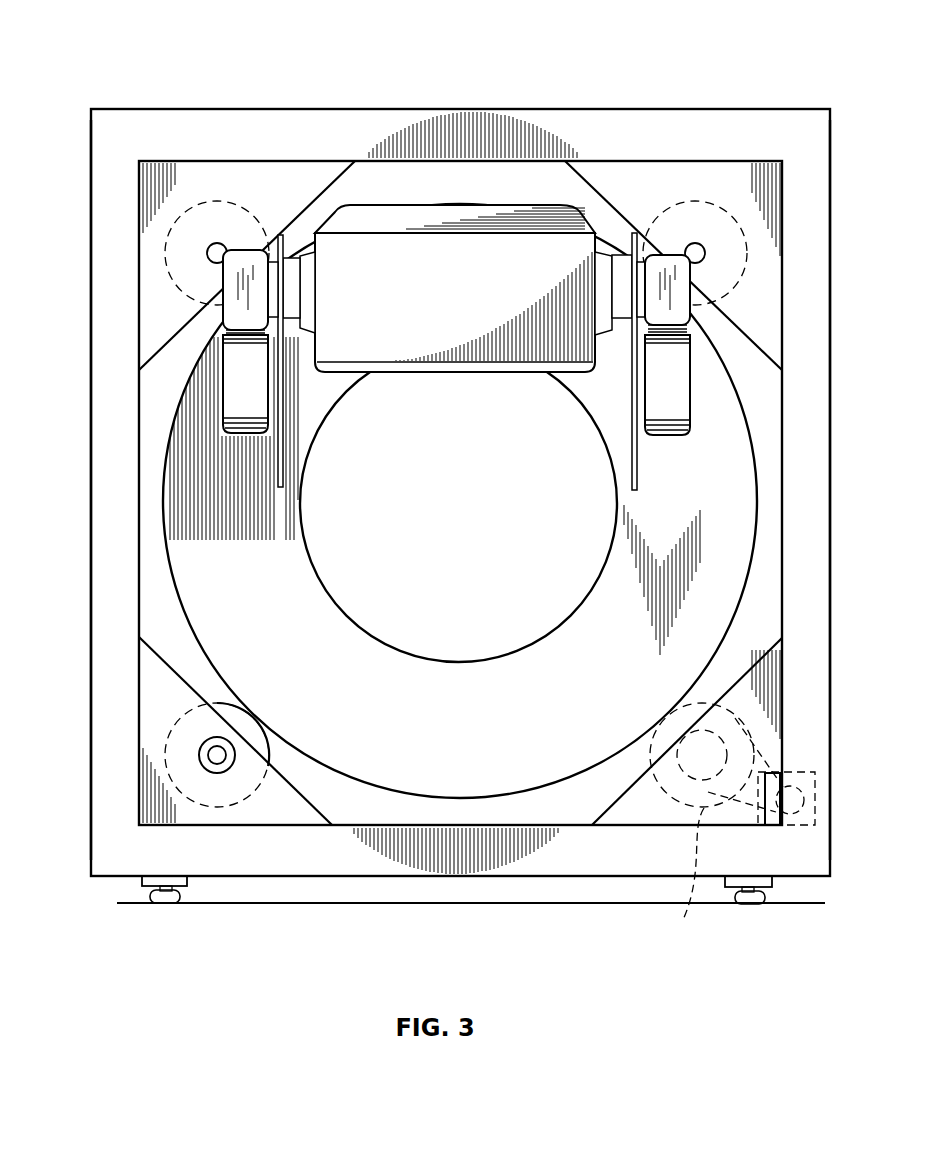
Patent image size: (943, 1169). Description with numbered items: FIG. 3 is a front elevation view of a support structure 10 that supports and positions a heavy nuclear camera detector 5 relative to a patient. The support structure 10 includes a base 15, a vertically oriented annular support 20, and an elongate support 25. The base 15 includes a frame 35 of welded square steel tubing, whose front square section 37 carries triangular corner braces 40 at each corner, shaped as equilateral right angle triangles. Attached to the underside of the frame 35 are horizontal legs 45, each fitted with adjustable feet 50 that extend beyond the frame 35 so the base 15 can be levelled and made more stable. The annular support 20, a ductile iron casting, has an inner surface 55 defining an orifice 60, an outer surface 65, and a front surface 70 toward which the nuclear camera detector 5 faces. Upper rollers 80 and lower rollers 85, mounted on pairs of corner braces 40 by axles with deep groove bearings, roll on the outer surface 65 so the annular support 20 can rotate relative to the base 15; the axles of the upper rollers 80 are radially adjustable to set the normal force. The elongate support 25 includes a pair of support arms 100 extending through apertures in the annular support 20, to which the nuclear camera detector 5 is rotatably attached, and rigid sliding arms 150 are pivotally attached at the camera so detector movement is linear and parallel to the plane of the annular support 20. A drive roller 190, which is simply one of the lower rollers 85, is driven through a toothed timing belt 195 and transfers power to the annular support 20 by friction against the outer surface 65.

The nuclear camera detector 5 is at (443, 298).
The support structure 10 is at (846, 106).
The base 15 is at (808, 600).
The annular support 20 is at (416, 686).
The elongate support 25 is at (252, 380).
The frame 35 is at (93, 165).
The front square section 37 is at (815, 207).
The corner braces 40 is at (256, 203).
The legs 45 is at (143, 881).
The feet 50 is at (165, 901).
The inner surface 55 is at (303, 528).
The orifice 60 is at (438, 518).
The outer surface 65 is at (212, 660).
The front surface 70 is at (438, 741).
The upper rollers 80 is at (208, 202).
The lower rollers 85 is at (258, 748).
The support arms 100 is at (238, 285).
The sliding arms 150 is at (281, 475).
The drive roller 190 is at (740, 712).
The toothed timing belt 195 is at (683, 920).